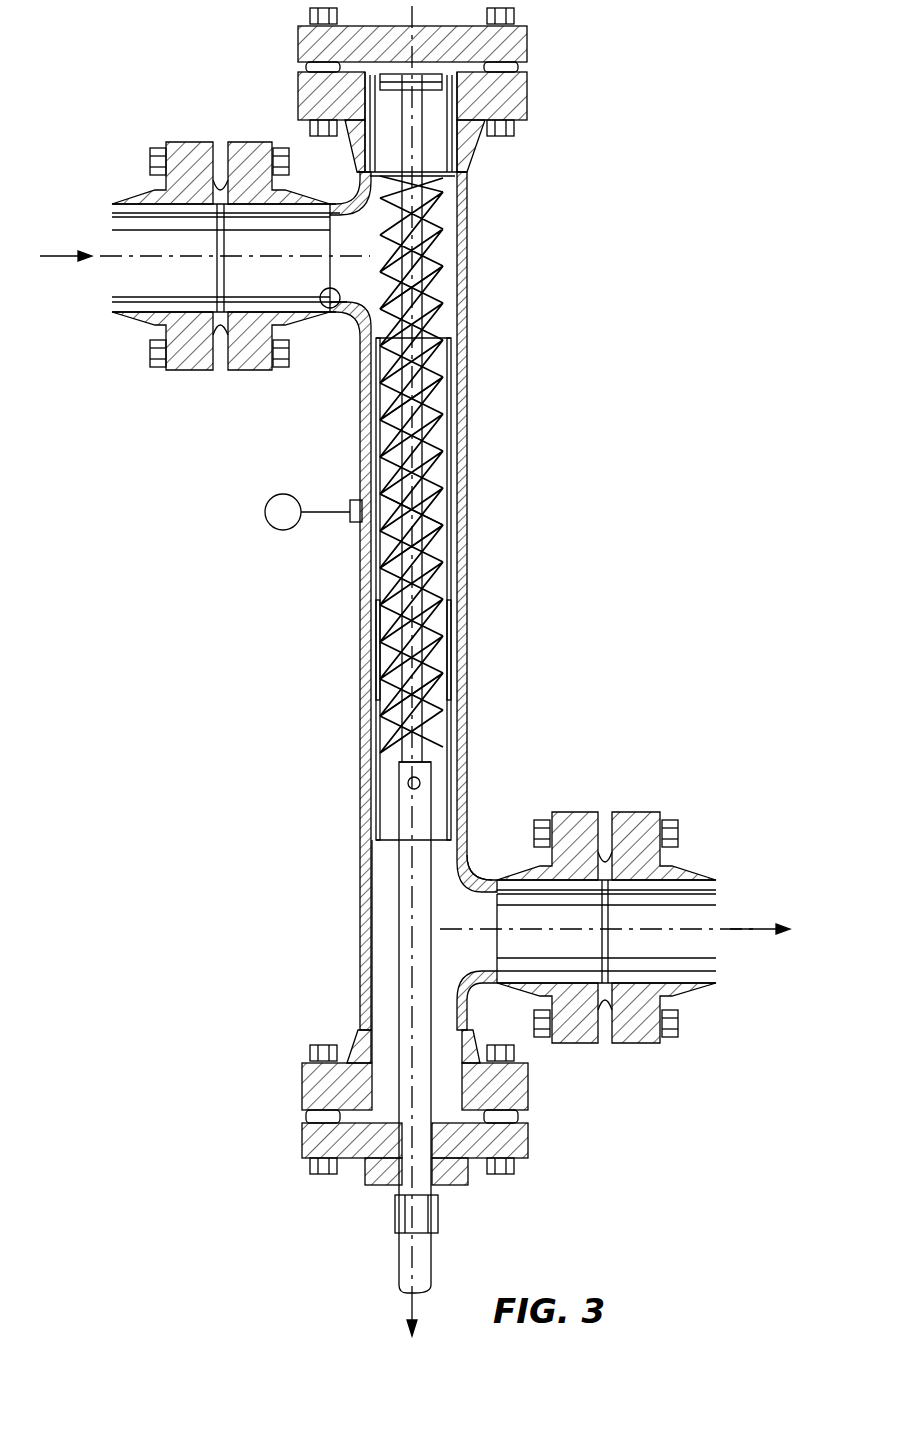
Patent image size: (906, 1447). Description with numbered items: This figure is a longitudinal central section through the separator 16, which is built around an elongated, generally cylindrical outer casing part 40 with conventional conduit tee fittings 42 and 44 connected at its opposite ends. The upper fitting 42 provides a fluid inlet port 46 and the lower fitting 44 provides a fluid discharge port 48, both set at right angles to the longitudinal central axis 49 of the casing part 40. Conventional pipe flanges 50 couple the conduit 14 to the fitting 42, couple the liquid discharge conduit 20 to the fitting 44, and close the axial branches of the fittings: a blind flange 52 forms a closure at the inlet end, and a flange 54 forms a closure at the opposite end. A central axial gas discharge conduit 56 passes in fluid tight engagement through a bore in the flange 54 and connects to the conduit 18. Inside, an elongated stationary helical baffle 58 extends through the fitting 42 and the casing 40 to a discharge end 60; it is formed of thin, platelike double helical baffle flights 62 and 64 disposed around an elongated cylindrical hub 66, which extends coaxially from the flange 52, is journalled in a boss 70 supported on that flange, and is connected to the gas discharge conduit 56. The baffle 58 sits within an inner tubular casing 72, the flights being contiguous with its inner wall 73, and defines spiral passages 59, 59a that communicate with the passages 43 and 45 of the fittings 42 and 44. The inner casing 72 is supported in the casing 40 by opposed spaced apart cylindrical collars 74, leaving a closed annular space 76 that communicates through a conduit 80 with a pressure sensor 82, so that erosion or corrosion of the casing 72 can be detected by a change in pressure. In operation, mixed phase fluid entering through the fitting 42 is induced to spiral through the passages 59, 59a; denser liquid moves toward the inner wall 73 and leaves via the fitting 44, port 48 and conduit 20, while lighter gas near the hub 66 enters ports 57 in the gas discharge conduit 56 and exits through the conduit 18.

The conduit 14 is at (64, 212).
The separator 16 is at (526, 362).
The conduit 18 is at (398, 1260).
The liquid discharge conduit 20 is at (735, 920).
The outer casing part 40 is at (468, 452).
The conduit tee fitting 42 is at (468, 280).
The passage 43 is at (370, 288).
The conduit tee fitting 44 is at (370, 885).
The passage 45 is at (478, 965).
The fluid inlet port 46 is at (330, 306).
The fluid discharge port 48 is at (490, 880).
The longitudinal central axis 49 is at (440, 700).
The pipe flanges 50 is at (527, 112).
The blind flange 52 is at (527, 57).
The flange 54 is at (528, 1145).
The gas discharge conduit 56 is at (455, 1185).
The ports 57 is at (408, 783).
The helical baffle 58 is at (450, 590).
The passage 59 is at (450, 548).
The passage 59a is at (440, 512).
The discharge end 60 is at (440, 748).
The helical baffle flight 62 is at (432, 180).
The helical baffle flight 64 is at (440, 300).
The hub 66 is at (445, 418).
The boss 70 is at (465, 140).
The inner casing 72 is at (460, 660).
The inner wall 73 is at (385, 660).
The cylindrical collars 74 is at (367, 345).
The annular space 76 is at (370, 562).
The conduit 80 is at (318, 515).
The pressure sensor 82 is at (268, 498).